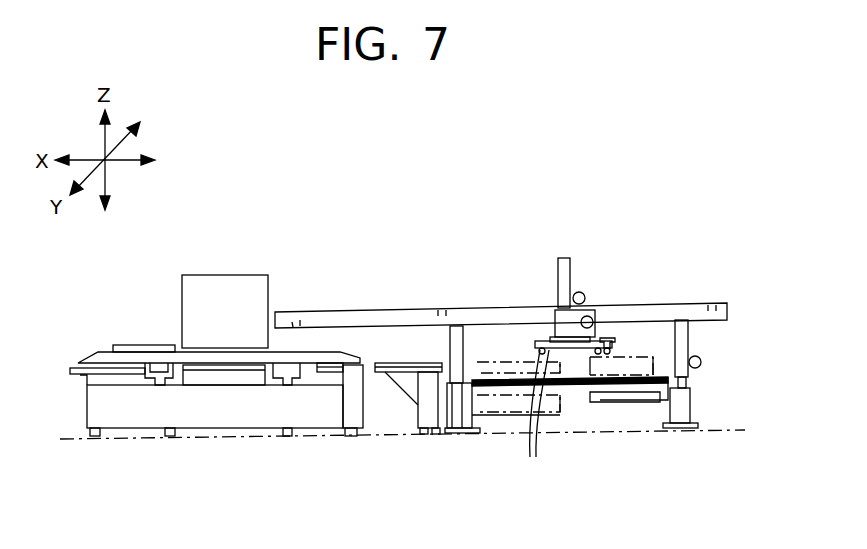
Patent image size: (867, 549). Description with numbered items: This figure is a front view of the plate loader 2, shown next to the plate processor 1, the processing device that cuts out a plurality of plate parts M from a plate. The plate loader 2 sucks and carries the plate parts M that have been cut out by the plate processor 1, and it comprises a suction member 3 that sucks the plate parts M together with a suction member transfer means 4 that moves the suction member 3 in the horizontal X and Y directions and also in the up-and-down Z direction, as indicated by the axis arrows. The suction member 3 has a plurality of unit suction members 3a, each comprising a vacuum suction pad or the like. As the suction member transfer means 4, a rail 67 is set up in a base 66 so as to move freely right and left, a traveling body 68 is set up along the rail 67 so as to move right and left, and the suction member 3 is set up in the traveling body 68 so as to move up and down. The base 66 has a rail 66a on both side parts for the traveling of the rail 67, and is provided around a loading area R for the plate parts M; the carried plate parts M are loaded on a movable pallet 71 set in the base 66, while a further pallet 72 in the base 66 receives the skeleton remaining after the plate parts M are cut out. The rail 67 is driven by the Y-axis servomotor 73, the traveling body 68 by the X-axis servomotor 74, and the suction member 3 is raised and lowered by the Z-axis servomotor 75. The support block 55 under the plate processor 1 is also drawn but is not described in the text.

The plate processor 1 is at (165, 296).
The plate loader 2 is at (550, 266).
The suction member 3 is at (536, 342).
The unit suction member 3a is at (532, 418).
The suction member transfer means 4 is at (540, 326).
The support block 55 is at (343, 372).
The base 66 is at (690, 400).
The rail 66a is at (445, 385).
The rail 67 is at (352, 312).
The traveling body 68 is at (548, 310).
The movable pallet 71 is at (565, 385).
The pallet 72 is at (636, 410).
The Y-axis servomotor 73 is at (703, 362).
The X-axis servomotor 74 is at (598, 311).
The Z-axis servomotor 75 is at (580, 291).
The plate parts M is at (641, 356).
The loading area R is at (586, 418).